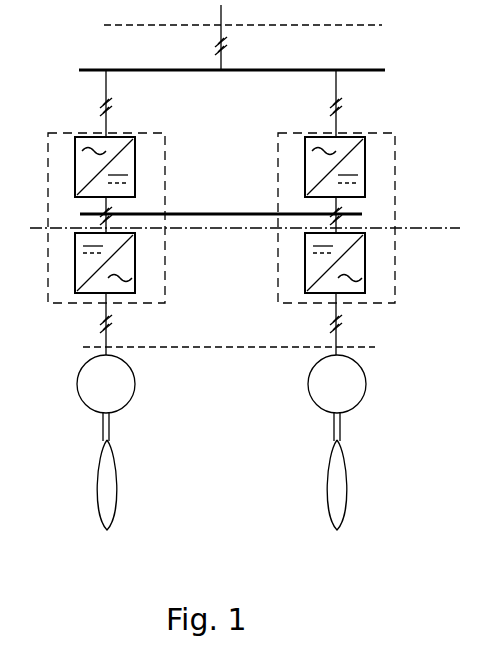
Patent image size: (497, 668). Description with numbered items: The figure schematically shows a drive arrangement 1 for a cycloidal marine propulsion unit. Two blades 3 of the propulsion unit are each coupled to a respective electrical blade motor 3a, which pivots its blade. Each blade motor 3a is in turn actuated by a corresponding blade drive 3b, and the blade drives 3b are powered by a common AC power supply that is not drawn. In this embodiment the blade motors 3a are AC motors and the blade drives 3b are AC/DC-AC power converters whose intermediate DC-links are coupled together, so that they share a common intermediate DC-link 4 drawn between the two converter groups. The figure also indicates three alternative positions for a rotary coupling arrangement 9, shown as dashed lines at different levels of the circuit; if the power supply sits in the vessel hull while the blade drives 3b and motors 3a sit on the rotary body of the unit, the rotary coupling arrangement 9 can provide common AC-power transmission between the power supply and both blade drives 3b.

The drive arrangement 1 is at (64, 566).
The blade 3 is at (119, 482).
The electrical blade motor 3a is at (221, 384).
The blade drive 3b is at (77, 290).
The common intermediate DC-link 4 is at (214, 212).
The rotary coupling arrangement 9 is at (382, 25).